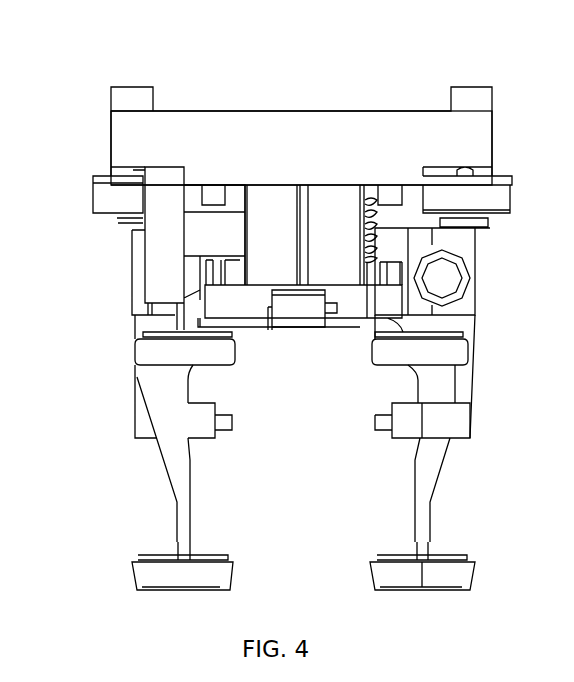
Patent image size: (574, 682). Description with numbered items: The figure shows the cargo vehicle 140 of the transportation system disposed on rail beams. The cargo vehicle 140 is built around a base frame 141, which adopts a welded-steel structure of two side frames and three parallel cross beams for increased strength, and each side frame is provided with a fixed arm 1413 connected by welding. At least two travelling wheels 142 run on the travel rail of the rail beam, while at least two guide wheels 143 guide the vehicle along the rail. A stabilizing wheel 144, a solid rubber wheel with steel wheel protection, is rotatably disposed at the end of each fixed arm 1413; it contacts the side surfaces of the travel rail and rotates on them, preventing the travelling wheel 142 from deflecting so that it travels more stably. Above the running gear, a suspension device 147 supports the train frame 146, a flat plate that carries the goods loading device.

The cargo vehicle 140 is at (300, 46).
The train frame 146 is at (235, 148).
The travelling wheel 142 is at (333, 247).
The suspension device 147 is at (125, 197).
The guide wheel 143 is at (173, 358).
The base frame 141 is at (245, 293).
The fixed arm 1413 is at (185, 505).
The stabilizing wheel 144 is at (412, 577).